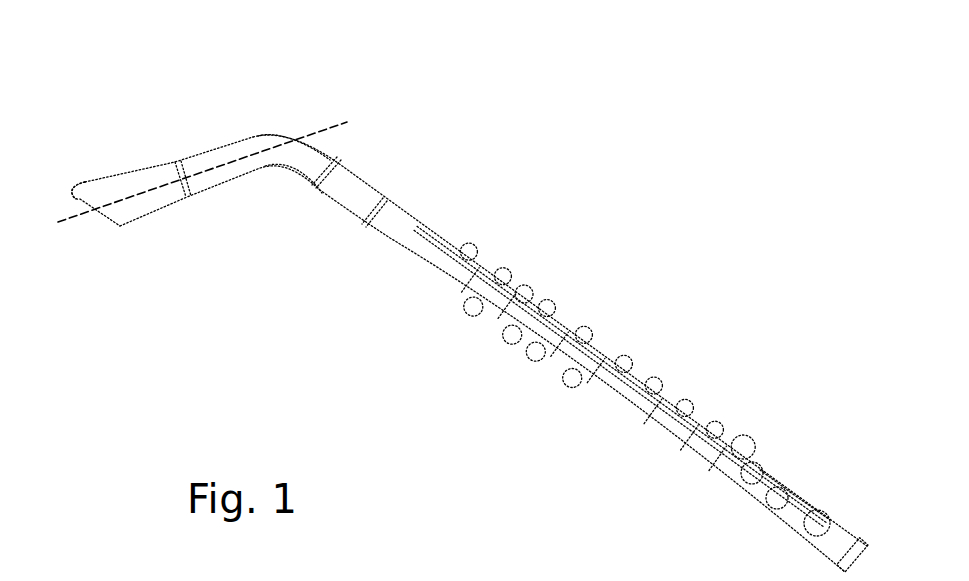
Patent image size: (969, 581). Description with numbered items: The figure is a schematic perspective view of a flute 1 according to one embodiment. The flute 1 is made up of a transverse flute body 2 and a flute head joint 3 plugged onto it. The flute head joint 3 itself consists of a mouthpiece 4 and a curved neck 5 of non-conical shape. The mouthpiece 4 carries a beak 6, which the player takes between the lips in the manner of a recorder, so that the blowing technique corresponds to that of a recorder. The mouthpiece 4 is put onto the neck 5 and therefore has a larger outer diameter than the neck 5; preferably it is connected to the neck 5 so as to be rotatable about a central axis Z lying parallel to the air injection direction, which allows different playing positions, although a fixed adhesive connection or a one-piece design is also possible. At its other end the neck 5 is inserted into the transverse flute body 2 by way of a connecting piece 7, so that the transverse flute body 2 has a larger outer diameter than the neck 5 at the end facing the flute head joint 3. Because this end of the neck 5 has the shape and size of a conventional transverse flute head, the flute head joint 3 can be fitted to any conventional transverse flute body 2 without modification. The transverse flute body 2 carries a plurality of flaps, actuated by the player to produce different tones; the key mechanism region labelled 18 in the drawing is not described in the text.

The flute 1 is at (645, 212).
The transverse flute body 2 is at (683, 358).
The flute head joint 3 is at (292, 100).
The mouthpiece 4 is at (162, 227).
The curved neck 5 is at (265, 188).
The beak 6 is at (85, 197).
The connecting piece 7 is at (360, 195).
The key 18 is at (525, 295).
The central axis Z is at (210, 170).